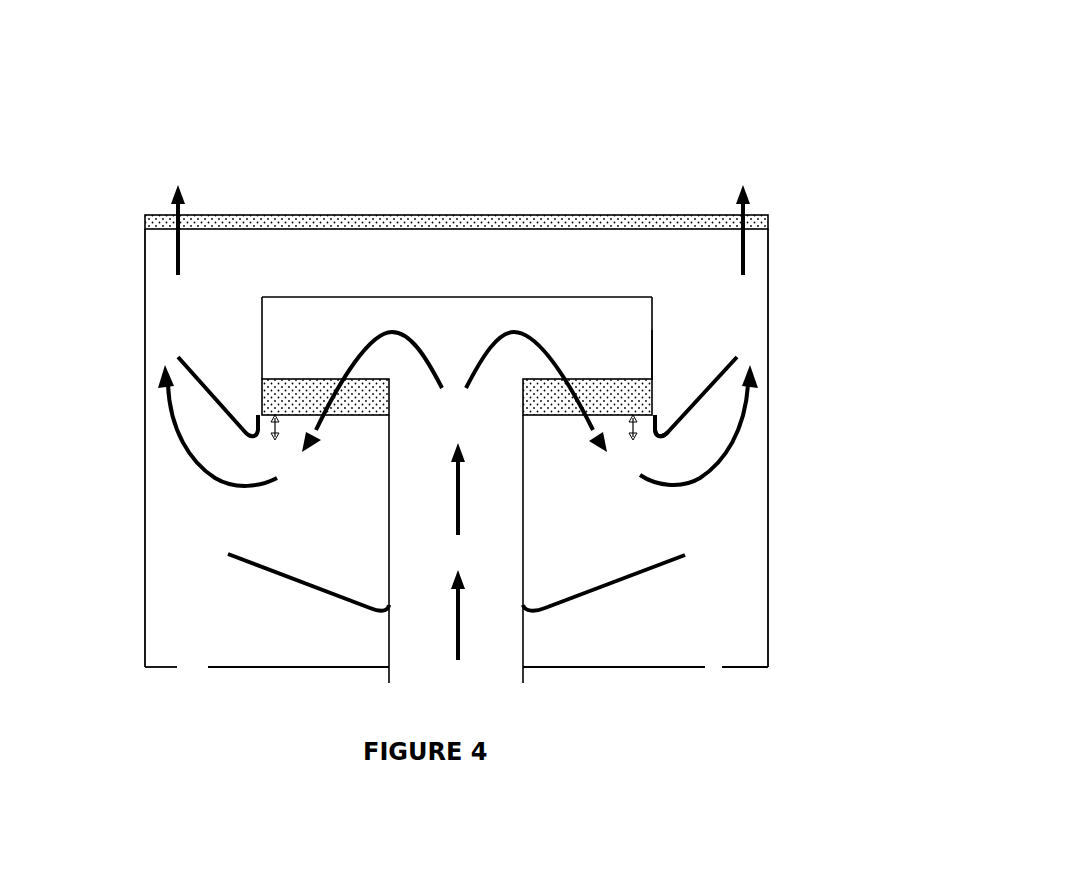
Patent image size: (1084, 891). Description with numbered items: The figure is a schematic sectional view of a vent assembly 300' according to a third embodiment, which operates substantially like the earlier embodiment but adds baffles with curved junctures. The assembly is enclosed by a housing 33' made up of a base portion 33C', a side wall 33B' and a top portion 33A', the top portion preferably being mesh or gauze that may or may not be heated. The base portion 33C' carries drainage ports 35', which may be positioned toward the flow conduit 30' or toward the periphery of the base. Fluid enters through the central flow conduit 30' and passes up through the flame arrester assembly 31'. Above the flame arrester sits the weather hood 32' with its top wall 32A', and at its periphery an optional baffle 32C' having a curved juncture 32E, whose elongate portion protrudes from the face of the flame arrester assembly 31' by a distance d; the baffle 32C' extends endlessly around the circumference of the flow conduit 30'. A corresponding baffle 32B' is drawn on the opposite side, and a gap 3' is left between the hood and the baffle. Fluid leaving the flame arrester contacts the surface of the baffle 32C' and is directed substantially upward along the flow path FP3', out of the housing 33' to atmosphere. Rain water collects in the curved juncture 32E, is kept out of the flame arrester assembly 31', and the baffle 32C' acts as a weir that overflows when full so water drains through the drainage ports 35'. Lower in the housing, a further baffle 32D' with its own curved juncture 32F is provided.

The vent assembly 300' is at (462, 392).
The top portion 33A' is at (456, 162).
The housing 33' is at (839, 448).
The side wall 33B' is at (76, 448).
The base portion 33C' is at (267, 718).
The drainage ports 35' is at (661, 716).
The weather hood 32' is at (457, 270).
The top wall of deflector 32A' is at (457, 229).
The flow gap 3' is at (690, 323).
The flame arrester assembly 31' is at (436, 288).
The flow conduit 30' is at (610, 549).
The left baffle 32B' is at (153, 367).
The baffle 32C' is at (786, 388).
The curved juncture 32E is at (662, 437).
The baffle 32D' is at (212, 605).
The curved juncture 32F is at (527, 610).
The flow path FP3' is at (388, 422).